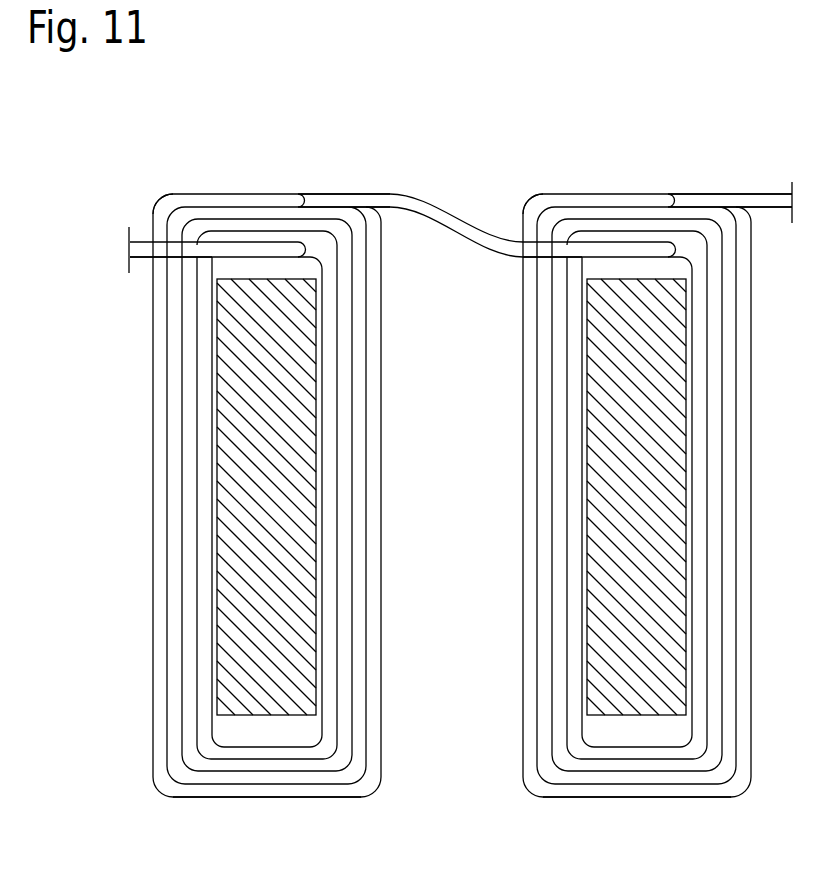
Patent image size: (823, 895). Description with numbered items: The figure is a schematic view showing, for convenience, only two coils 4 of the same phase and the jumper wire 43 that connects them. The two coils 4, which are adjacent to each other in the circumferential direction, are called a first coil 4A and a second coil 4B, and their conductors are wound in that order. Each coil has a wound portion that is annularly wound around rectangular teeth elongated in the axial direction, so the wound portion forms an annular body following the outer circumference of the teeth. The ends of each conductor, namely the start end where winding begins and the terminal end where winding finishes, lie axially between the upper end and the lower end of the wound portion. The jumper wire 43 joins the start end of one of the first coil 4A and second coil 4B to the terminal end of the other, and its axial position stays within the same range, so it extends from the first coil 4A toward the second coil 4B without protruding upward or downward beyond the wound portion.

The coil 4 is at (417, 495).
The first coil 4A is at (216, 495).
The second coil 4B is at (602, 495).
The jumper wire 43 is at (455, 232).